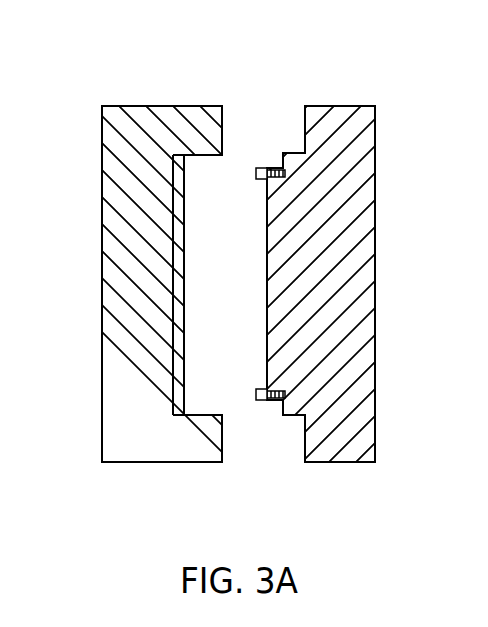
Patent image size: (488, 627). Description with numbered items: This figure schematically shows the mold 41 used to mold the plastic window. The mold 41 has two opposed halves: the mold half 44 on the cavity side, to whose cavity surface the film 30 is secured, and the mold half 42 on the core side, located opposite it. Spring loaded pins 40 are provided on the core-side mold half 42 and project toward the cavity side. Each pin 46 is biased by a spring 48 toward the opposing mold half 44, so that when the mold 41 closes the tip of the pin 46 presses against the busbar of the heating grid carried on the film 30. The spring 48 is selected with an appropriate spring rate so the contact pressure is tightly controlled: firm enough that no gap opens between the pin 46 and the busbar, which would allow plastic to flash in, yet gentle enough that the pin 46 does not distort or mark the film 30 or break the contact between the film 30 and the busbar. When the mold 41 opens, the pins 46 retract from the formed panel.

The mold 41 is at (244, 313).
The mold half 44 is at (127, 213).
The film 30 is at (178, 336).
The mold half 42 is at (350, 213).
The spring loaded pins 40 is at (269, 291).
The pin 46 is at (262, 168).
The spring 48 is at (284, 165).